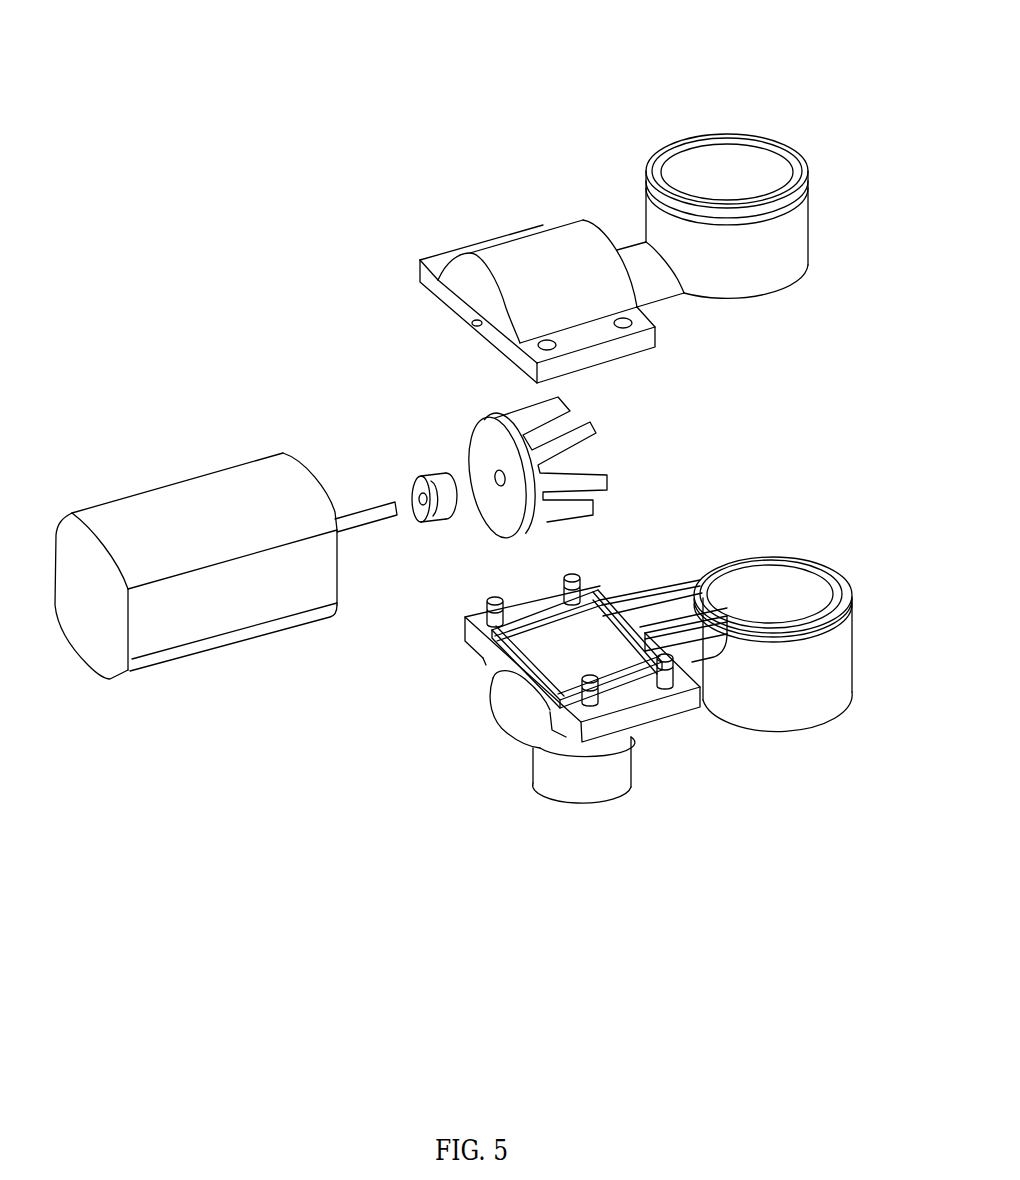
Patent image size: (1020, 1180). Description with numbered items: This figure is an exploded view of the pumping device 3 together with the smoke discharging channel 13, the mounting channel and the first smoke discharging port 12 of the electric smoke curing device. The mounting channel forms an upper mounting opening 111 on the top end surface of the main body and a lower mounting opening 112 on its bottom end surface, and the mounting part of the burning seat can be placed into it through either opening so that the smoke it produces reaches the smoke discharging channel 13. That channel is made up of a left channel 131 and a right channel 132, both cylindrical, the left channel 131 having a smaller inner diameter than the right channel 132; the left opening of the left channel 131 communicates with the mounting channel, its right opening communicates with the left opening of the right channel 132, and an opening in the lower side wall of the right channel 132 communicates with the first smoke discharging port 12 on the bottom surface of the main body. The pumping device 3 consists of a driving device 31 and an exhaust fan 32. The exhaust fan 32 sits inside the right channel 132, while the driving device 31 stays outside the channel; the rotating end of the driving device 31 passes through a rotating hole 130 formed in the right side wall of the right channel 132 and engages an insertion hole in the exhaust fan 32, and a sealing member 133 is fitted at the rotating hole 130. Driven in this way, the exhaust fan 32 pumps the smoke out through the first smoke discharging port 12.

The pumping device 3 is at (331, 587).
The driving device 31 is at (275, 592).
The exhaust fan 32 is at (494, 506).
The sealing member 133 is at (412, 488).
The first smoke discharging port 12 is at (661, 680).
The smoke discharging channel 13 is at (614, 553).
The rotating hole 130 is at (472, 330).
The left channel 131 is at (652, 616).
The right channel 132 is at (585, 665).
The upper mounting opening 111 is at (720, 180).
The lower mounting opening 112 is at (781, 722).